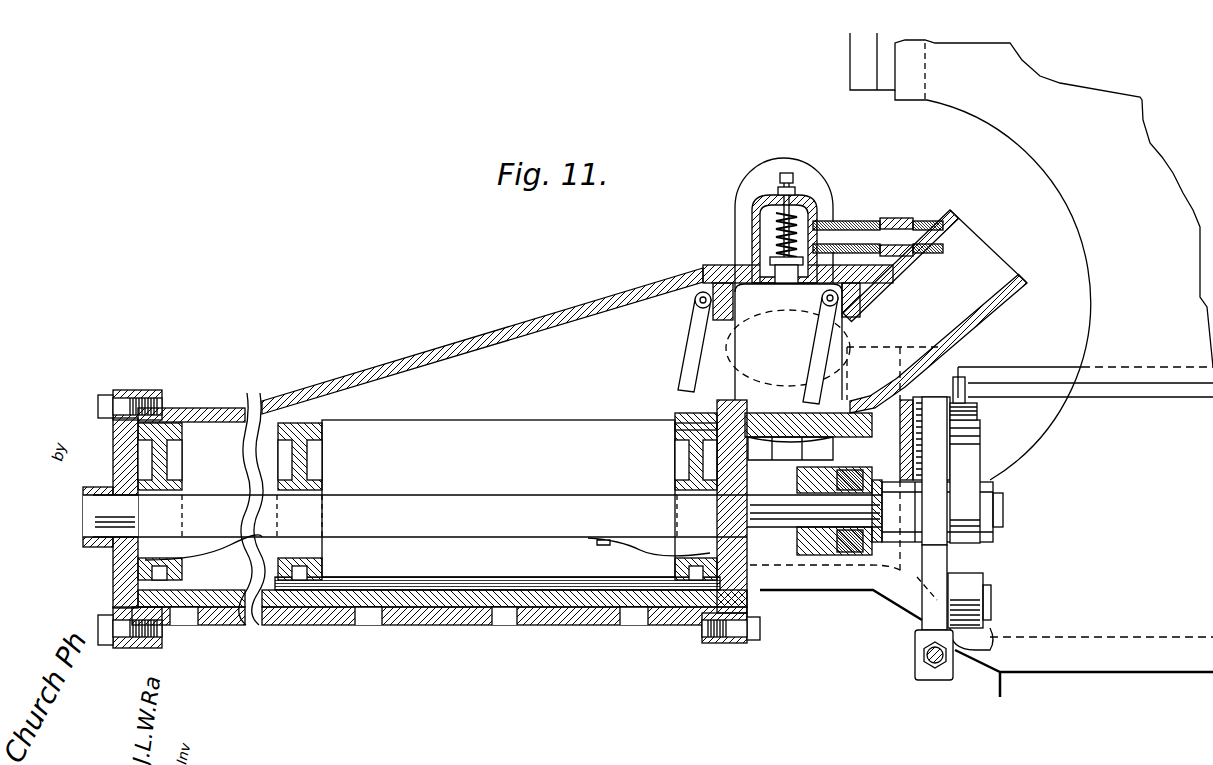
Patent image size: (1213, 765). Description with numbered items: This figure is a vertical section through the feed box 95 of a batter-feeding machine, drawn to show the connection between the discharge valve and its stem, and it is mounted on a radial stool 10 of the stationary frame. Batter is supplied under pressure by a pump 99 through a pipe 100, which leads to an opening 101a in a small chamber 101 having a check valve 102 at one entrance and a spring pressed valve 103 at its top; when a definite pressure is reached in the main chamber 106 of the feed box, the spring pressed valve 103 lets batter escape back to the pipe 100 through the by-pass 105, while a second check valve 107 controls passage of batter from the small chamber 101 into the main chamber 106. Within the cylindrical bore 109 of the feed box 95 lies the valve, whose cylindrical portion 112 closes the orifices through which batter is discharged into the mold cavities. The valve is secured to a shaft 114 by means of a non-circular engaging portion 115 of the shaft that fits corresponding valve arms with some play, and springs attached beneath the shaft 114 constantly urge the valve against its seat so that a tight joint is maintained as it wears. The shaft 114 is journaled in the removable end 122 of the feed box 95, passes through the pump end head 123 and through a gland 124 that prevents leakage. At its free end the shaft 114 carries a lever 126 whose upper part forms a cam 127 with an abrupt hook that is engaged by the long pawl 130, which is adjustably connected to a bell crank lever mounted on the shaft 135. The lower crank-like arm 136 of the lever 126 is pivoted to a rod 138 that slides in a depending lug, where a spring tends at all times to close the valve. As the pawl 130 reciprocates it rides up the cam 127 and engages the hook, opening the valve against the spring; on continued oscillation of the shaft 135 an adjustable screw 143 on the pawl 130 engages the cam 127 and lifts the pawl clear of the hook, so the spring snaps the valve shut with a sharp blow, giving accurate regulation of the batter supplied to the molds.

The radial stool 10 is at (1002, 700).
The feed box 95 is at (663, 620).
The pump 99 is at (735, 233).
The pipe 100 is at (1028, 256).
The small chamber 101 is at (821, 332).
The opening 101a is at (772, 290).
The check valve 102 is at (822, 343).
The spring pressed valve 103 is at (787, 283).
The by-pass 105 is at (862, 230).
The main chamber 106 is at (420, 446).
The second check valve 107 is at (690, 370).
The cylindrical bore 109 is at (585, 603).
The cylindrical portion 112 is at (463, 588).
The shaft 114 is at (85, 530).
The engaging portion 115 is at (485, 487).
The removable end 122 is at (113, 593).
The pump end head 123 is at (748, 610).
The gland 124 is at (850, 543).
The lever 126 is at (923, 543).
The cam 127 is at (942, 447).
The long pawl 130 is at (940, 413).
The shaft 135 is at (1033, 357).
The lower crank-like arm 136 is at (930, 603).
The rod 138 is at (920, 655).
The adjustable screw 143 is at (968, 377).